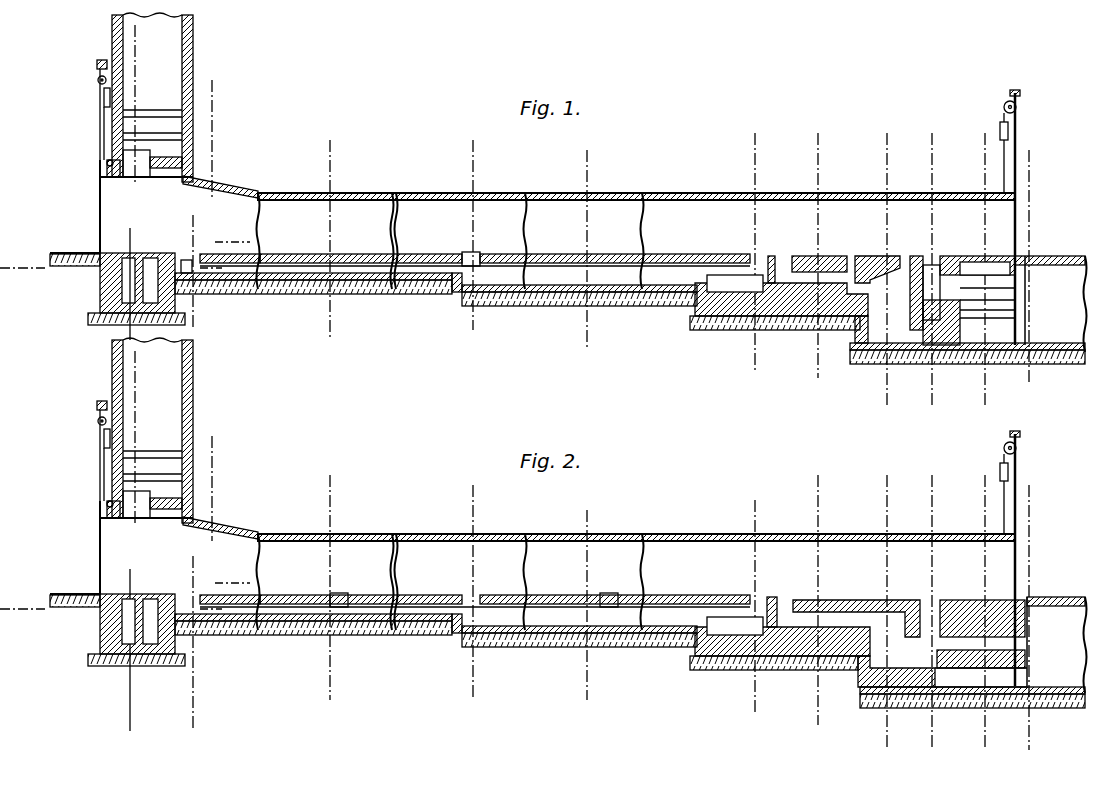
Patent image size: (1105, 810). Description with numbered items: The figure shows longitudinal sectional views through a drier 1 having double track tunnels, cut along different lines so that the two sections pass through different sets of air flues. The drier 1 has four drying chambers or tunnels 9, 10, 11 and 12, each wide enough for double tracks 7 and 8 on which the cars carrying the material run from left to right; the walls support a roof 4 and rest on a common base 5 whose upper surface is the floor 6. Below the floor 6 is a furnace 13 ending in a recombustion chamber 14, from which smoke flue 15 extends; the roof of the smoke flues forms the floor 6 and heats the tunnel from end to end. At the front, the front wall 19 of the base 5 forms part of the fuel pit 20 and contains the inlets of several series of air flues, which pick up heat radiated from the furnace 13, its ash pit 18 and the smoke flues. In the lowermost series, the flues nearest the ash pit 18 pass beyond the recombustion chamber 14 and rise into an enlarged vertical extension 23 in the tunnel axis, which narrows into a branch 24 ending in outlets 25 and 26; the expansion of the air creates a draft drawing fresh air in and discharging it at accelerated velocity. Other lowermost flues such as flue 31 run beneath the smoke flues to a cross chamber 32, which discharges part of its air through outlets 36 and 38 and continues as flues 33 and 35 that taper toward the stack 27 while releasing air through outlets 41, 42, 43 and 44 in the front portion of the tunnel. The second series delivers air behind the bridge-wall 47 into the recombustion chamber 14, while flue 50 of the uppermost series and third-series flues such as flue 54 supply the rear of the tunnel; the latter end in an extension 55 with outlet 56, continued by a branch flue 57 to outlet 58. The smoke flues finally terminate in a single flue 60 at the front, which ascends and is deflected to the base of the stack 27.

In FIG. 1, the drier 1 is at (520, 193).
In FIG. 2, the drier 1 is at (519, 520).
In FIG. 1, the roof 4 is at (648, 195).
In FIG. 2, the roof 4 is at (643, 520).
In FIG. 1, the base 5 is at (712, 340).
In FIG. 2, the base 5 is at (786, 601).
In FIG. 1, the floor 6 is at (608, 262).
In FIG. 2, the floor 6 is at (768, 606).
In FIG. 1, the track 7 is at (352, 262).
In FIG. 2, the track 7 is at (567, 609).
In FIG. 1, the track 8 is at (884, 263).
In FIG. 2, the track 8 is at (655, 606).
In FIG. 1, the tunnel 9 is at (680, 215).
In FIG. 2, the tunnel 9 is at (636, 594).
In FIG. 1, the tunnel 10 is at (744, 248).
In FIG. 2, the tunnel 10 is at (738, 605).
In FIG. 1, the tunnel 11 is at (591, 248).
In FIG. 2, the tunnel 11 is at (572, 603).
In FIG. 1, the tunnel 12 is at (450, 236).
In FIG. 2, the tunnel 12 is at (460, 588).
In FIG. 1, the furnace 13 is at (698, 238).
In FIG. 2, the furnace 13 is at (324, 585).
In FIG. 1, the recombustion chamber 14 is at (566, 201).
In FIG. 2, the recombustion chamber 14 is at (205, 579).
In FIG. 1, the smoke flue 15 is at (152, 97).
In FIG. 2, the smoke flue 15 is at (152, 544).
In FIG. 1, the ash pit 18 is at (966, 350).
In FIG. 1, the front wall 19 is at (130, 242).
In FIG. 2, the front wall 19 is at (542, 588).
In FIG. 1, the fuel pit 20 is at (1056, 304).
In FIG. 2, the fuel pit 20 is at (1057, 645).
In FIG. 1, the vertical extension 23 is at (870, 345).
In FIG. 1, the branch 24 is at (834, 262).
In FIG. 1, the outlet 25 is at (860, 263).
In FIG. 1, the outlet 26 is at (796, 262).
In FIG. 1, the stack 27 is at (112, 42).
In FIG. 2, the stack 27 is at (95, 438).
In FIG. 2, the air flue 31 is at (972, 701).
In FIG. 1, the cross chamber 32 is at (690, 300).
In FIG. 2, the cross chamber 32 is at (717, 666).
In FIG. 1, the flue 33 is at (510, 280).
In FIG. 2, the flue 35 is at (613, 652).
In FIG. 1, the outlet 36 is at (752, 262).
In FIG. 2, the outlet 38 is at (812, 628).
In FIG. 1, the outlet 41 is at (466, 252).
In FIG. 1, the outlet 42 is at (190, 255).
In FIG. 2, the outlet 43 is at (607, 584).
In FIG. 2, the outlet 44 is at (345, 584).
In FIG. 1, the bridge-wall 47 is at (975, 290).
In FIG. 1, the flue 50 is at (965, 252).
In FIG. 2, the flue 54 is at (1002, 640).
In FIG. 2, the extension 55 is at (856, 601).
In FIG. 2, the outlet 56 is at (982, 601).
In FIG. 2, the branch flue 57 is at (851, 593).
In FIG. 2, the outlet 58 is at (782, 584).
In FIG. 1, the flue 60 is at (124, 297).
In FIG. 2, the flue 60 is at (136, 614).